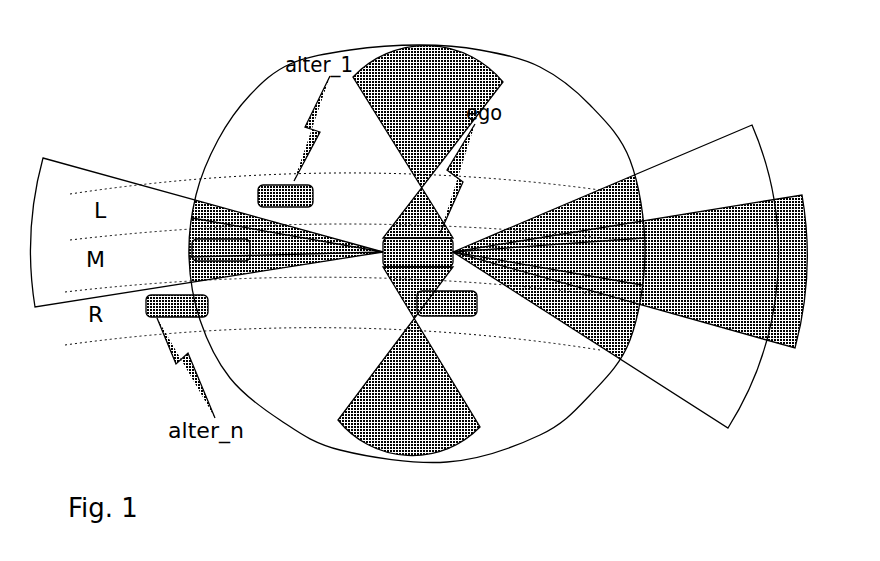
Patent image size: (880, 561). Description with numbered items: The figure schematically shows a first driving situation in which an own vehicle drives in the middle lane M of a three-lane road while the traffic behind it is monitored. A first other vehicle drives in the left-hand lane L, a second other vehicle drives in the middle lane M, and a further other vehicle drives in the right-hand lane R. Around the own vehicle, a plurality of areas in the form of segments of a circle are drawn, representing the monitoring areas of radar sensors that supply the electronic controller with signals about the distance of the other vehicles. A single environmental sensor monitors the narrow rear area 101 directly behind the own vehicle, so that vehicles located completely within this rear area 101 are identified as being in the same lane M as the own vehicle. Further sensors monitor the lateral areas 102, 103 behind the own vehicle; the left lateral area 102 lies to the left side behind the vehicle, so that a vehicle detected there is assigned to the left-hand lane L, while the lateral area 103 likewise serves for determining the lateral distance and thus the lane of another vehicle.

The area behind the own vehicle 101 is at (73, 174).
The lateral area to the left side behind the own vehicle 102 is at (267, 138).
The lateral area behind the own vehicle 103 is at (320, 357).